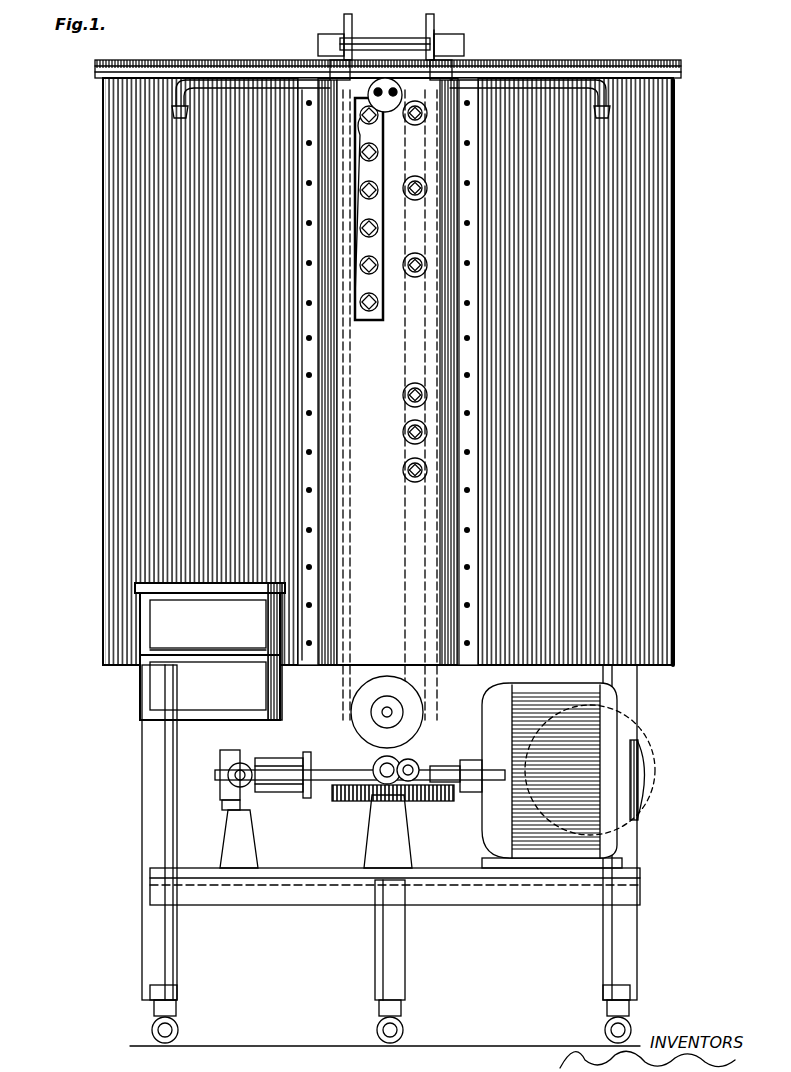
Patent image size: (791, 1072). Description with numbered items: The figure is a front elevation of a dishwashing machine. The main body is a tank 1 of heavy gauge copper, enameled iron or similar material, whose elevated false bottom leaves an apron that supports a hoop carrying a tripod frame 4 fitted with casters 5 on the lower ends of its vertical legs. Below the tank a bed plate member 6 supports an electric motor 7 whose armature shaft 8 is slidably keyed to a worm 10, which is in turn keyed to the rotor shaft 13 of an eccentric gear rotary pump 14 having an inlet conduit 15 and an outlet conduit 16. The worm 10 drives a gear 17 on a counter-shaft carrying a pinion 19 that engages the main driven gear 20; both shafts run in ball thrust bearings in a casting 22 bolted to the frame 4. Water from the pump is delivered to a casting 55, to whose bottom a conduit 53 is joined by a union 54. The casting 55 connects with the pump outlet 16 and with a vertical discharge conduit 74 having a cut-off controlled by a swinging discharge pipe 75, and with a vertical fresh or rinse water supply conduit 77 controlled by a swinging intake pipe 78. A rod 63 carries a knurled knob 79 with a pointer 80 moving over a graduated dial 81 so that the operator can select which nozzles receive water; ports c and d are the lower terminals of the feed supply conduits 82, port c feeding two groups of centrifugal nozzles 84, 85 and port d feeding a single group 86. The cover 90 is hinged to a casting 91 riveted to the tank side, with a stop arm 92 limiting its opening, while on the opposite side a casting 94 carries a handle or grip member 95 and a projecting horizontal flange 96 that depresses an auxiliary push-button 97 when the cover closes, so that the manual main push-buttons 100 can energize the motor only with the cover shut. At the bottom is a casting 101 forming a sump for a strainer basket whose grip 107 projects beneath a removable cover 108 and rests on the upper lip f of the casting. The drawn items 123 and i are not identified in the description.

The tank 1 is at (674, 297).
The tripod frame 4 is at (170, 920).
The casters 5 is at (178, 1012).
The bed plate member 6 is at (540, 858).
The electric motor 7 is at (568, 770).
The armature shaft 8 is at (460, 772).
The worm 10 is at (468, 792).
The rotor shaft 13 is at (330, 782).
The eccentric gear rotary pump 14 is at (296, 792).
The inlet conduit 15 is at (222, 752).
The outlet conduit 16 is at (253, 802).
The gear 17 is at (352, 802).
The pinion 19 is at (362, 846).
The main driven gear 20 is at (408, 840).
The casting 22 is at (300, 878).
The conduit 53 is at (418, 766).
The union 54 is at (400, 756).
The casting 55 is at (318, 290).
The rod 63 is at (370, 700).
The vertical discharge conduit 74 is at (325, 516).
The swinging discharge pipe 75 is at (270, 90).
The vertical fresh or rinse water supply conduit 77 is at (438, 572).
The swinging intake pipe 78 is at (560, 84).
The knurled knob 79 is at (420, 690).
The pointer 80 is at (372, 760).
The graduated dial 81 is at (392, 708).
The feed supply conduits 82 is at (425, 532).
The centrifugal nozzles 84 is at (395, 470).
The centrifugal nozzles 85 is at (352, 242).
The centrifugal nozzles 86 is at (385, 198).
The cover 90 is at (105, 66).
The casting 91 is at (318, 46).
The stop arm 92 is at (344, 19).
The casting 94 is at (340, 42).
The handle or grip member 95 is at (438, 28).
The projecting horizontal flange 96 is at (452, 50).
The auxiliary push-button 97 is at (370, 100).
The main push-buttons 100 is at (365, 107).
The casting 101 is at (208, 639).
The grip 107 is at (208, 592).
The removable cover 108 is at (285, 575).
The bracket 123 is at (315, 746).
The port c is at (422, 700).
The port d is at (356, 696).
The upper lip f is at (240, 590).
The point i is at (674, 655).